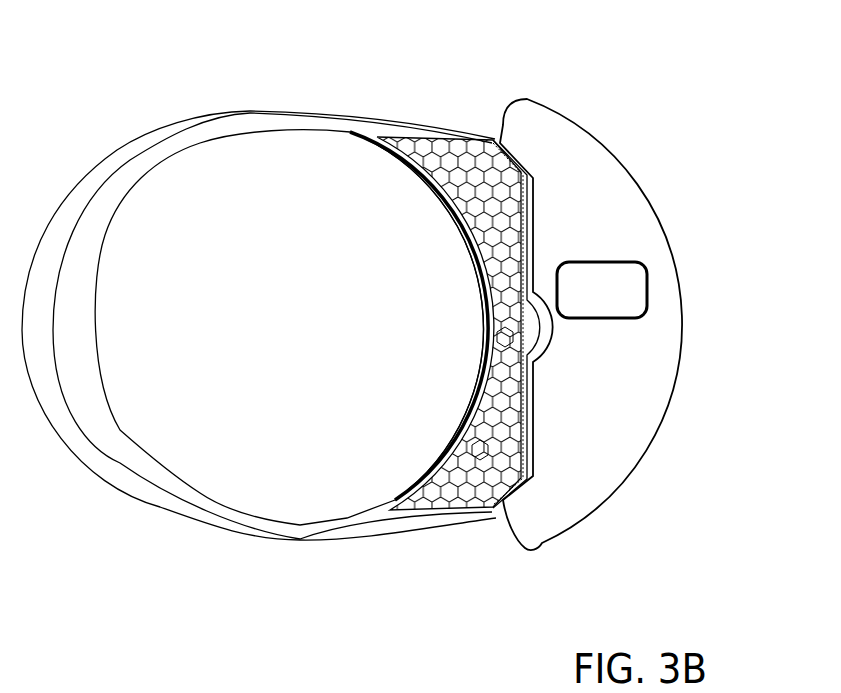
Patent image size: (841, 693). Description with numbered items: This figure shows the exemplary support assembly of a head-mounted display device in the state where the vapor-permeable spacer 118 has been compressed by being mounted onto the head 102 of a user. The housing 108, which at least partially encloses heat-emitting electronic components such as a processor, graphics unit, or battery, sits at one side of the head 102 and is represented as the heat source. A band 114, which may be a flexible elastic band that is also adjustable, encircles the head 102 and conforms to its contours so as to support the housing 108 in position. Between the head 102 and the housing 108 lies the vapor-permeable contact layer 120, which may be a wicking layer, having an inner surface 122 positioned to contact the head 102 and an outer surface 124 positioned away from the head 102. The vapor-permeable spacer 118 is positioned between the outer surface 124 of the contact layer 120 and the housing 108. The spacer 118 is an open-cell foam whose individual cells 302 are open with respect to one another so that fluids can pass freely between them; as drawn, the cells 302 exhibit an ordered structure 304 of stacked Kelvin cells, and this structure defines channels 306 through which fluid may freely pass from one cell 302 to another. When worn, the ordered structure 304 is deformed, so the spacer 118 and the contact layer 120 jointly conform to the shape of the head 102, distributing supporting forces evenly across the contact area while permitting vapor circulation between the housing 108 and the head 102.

The head 102 is at (260, 350).
The housing 108 is at (622, 487).
The band 114 is at (250, 111).
The vapor-permeable spacer 118 is at (480, 143).
The vapor-permeable contact layer 120 is at (385, 131).
The inner surface 122 is at (426, 178).
The outer surface 124 is at (432, 166).
The cells 302 is at (425, 497).
The ordered structure 304 is at (504, 335).
The channels 306 is at (477, 446).